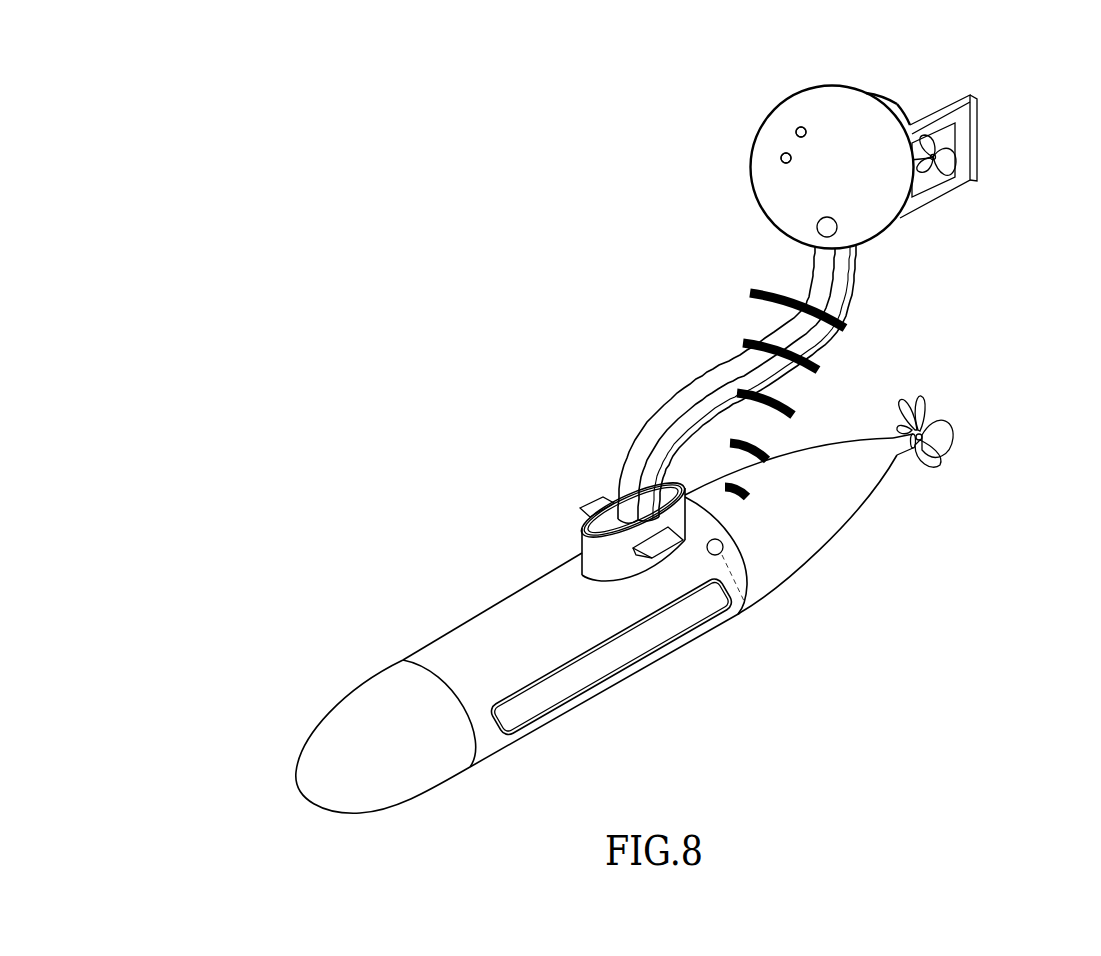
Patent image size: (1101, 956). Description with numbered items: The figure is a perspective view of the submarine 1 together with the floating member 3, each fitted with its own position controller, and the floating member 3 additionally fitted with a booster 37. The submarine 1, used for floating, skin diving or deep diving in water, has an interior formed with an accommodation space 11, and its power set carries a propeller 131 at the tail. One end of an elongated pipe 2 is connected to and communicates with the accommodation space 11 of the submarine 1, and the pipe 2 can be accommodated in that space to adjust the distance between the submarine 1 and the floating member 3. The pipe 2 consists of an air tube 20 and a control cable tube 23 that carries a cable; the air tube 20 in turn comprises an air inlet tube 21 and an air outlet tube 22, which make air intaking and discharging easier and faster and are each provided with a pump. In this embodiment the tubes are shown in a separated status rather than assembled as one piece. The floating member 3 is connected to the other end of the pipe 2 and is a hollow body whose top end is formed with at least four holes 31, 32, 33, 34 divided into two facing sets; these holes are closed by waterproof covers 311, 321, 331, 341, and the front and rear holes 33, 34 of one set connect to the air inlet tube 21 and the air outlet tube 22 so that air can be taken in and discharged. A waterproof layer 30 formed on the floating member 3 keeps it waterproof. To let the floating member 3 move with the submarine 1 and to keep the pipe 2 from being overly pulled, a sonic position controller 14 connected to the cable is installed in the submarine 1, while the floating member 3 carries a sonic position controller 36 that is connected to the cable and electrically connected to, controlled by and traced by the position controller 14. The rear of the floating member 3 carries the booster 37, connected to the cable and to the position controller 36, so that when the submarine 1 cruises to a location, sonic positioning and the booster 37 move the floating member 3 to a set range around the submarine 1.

The submarine 1 is at (340, 750).
The accommodation space 11 is at (843, 530).
The propeller 131 is at (937, 431).
The position controller 14 is at (747, 597).
The pipe 2 is at (758, 382).
The air tube 20 is at (663, 383).
The air inlet tube 21 is at (642, 445).
The air outlet tube 22 is at (720, 398).
The control cable tube 23 is at (817, 345).
The floating member 3 is at (809, 151).
The waterproof layer 30 is at (788, 230).
The hole 31 is at (798, 127).
The waterproof cover 311 is at (795, 133).
The hole 32 is at (867, 90).
The waterproof cover 321 is at (890, 105).
The hole 33 is at (780, 158).
The waterproof cover 331 is at (783, 163).
The hole 34 is at (897, 100).
The waterproof cover 341 is at (893, 102).
The position controller 36 is at (838, 228).
The booster 37 is at (947, 167).